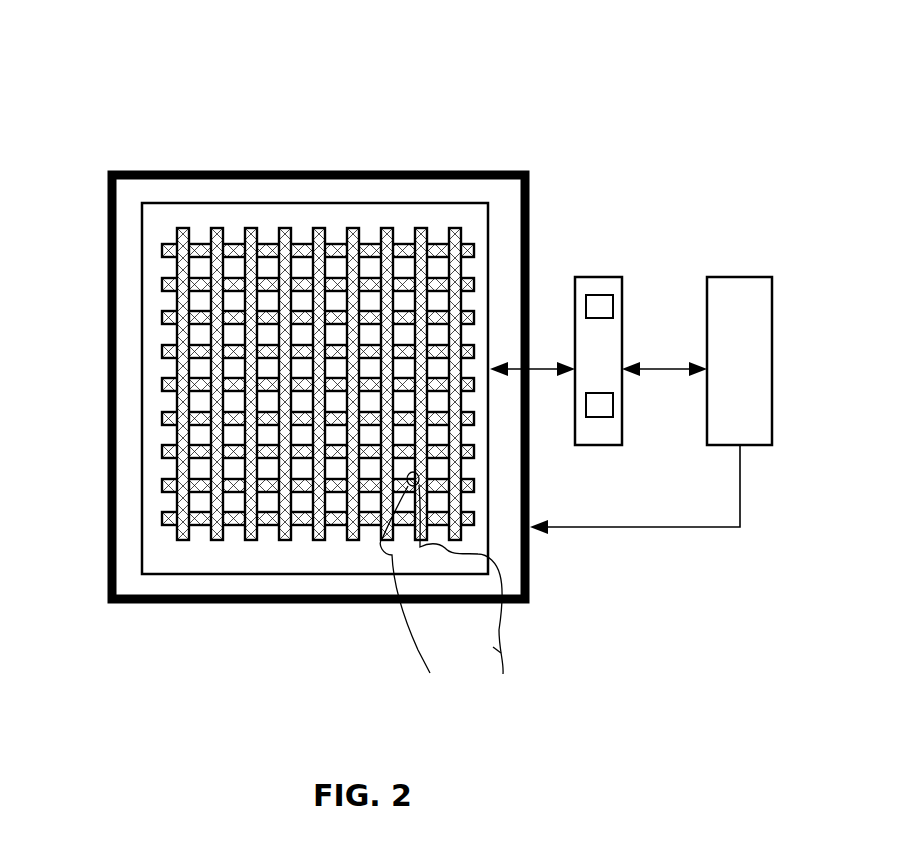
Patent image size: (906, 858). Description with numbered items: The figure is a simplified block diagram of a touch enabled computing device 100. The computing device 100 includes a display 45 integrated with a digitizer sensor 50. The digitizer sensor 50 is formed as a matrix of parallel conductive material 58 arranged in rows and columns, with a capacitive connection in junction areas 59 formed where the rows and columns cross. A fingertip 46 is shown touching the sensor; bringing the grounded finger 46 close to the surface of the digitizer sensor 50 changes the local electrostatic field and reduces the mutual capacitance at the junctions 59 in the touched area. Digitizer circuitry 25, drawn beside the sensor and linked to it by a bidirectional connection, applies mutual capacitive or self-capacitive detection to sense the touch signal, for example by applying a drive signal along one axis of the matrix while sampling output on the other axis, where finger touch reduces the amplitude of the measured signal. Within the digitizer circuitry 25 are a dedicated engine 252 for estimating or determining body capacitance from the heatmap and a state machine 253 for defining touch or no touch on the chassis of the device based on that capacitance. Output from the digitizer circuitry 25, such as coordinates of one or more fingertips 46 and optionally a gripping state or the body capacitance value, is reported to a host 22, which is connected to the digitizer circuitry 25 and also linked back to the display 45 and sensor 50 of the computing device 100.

The computing device 100 is at (313, 80).
The display 45 is at (447, 170).
The digitizer sensor 50 is at (490, 253).
The parallel conductive material 58 is at (385, 229).
The junction areas 59 is at (250, 415).
The fingertip 46 is at (406, 486).
The digitizer circuitry 25 is at (597, 277).
The dedicated engine 252 is at (613, 308).
The state machine 253 is at (613, 408).
The host 22 is at (737, 277).